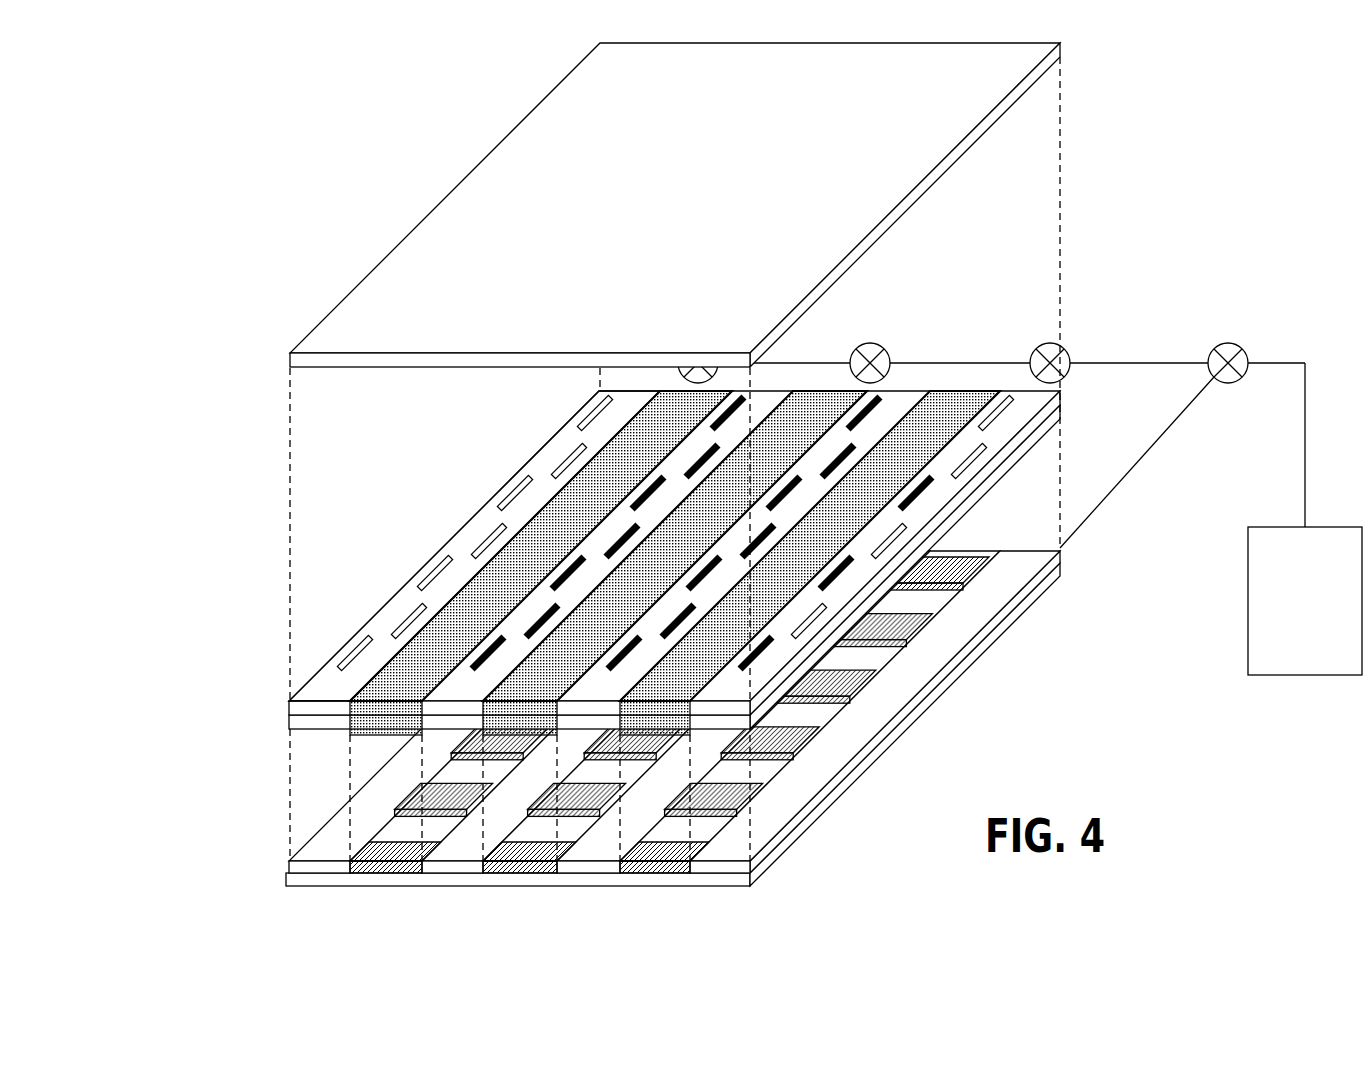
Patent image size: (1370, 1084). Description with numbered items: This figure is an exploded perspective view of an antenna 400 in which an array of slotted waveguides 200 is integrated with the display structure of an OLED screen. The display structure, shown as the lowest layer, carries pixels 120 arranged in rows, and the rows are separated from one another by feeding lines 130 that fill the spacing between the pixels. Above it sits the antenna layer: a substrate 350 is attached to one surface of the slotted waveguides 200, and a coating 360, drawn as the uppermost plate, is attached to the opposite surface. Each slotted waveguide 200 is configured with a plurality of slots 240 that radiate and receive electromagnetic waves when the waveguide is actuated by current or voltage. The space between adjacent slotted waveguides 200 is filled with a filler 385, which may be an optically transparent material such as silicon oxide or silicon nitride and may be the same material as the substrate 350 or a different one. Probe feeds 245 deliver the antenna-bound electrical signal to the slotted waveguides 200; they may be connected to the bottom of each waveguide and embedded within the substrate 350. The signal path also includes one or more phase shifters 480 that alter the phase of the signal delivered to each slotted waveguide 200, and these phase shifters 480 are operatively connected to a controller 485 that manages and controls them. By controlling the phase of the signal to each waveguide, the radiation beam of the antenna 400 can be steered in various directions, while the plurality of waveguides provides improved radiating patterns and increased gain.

The pixels 120 is at (403, 875).
The feeding lines 130 is at (335, 867).
The slotted waveguide 200 is at (312, 708).
The slots 240 is at (355, 650).
The probe feeds 245 is at (333, 692).
The substrate 350 is at (313, 722).
The coating 360 is at (652, 205).
The filler 385 is at (500, 580).
The antenna 400 is at (600, 420).
The phase shifters 480 is at (1228, 343).
The controller 485 is at (1300, 676).